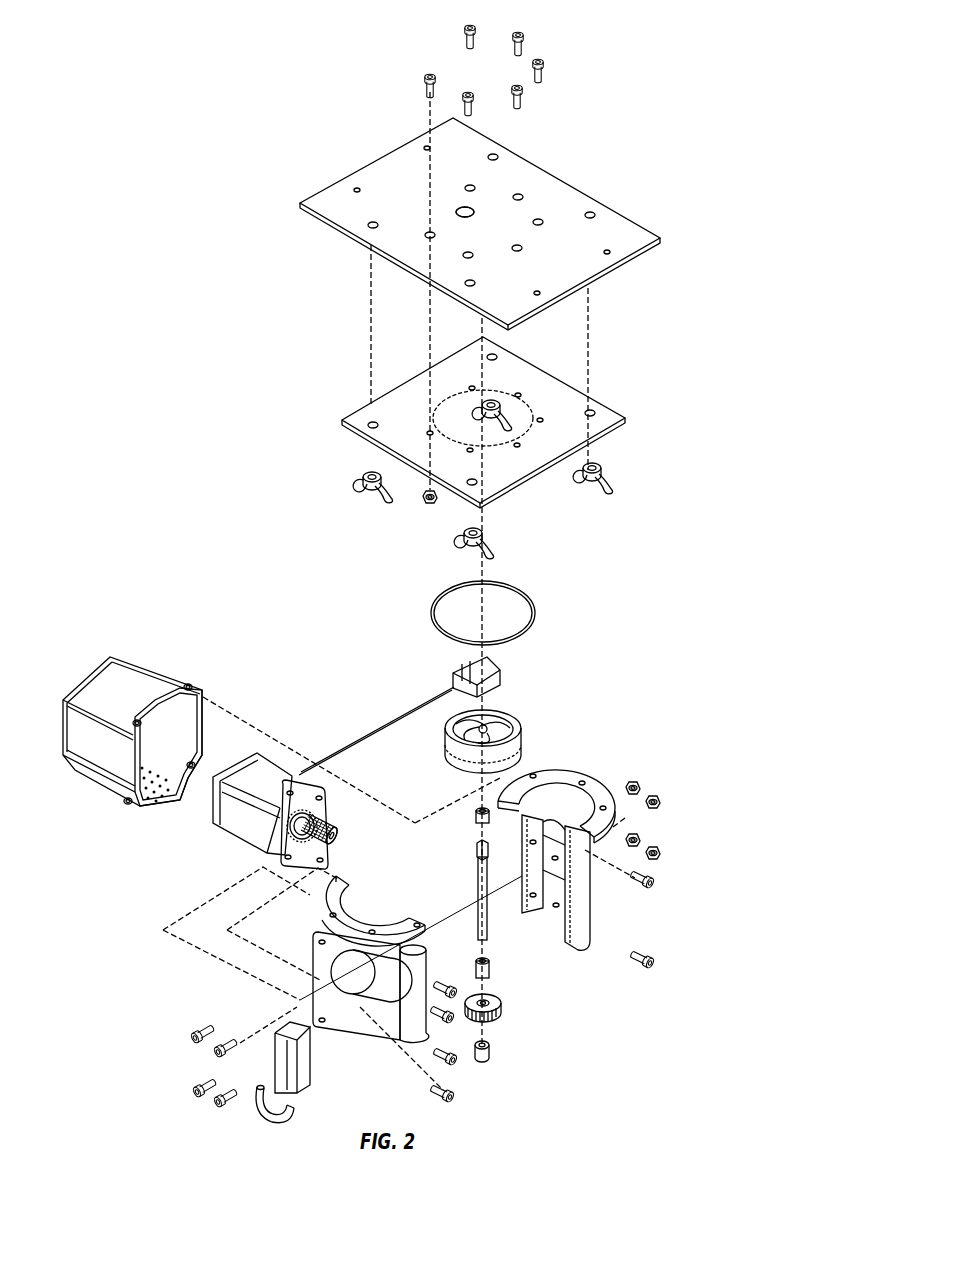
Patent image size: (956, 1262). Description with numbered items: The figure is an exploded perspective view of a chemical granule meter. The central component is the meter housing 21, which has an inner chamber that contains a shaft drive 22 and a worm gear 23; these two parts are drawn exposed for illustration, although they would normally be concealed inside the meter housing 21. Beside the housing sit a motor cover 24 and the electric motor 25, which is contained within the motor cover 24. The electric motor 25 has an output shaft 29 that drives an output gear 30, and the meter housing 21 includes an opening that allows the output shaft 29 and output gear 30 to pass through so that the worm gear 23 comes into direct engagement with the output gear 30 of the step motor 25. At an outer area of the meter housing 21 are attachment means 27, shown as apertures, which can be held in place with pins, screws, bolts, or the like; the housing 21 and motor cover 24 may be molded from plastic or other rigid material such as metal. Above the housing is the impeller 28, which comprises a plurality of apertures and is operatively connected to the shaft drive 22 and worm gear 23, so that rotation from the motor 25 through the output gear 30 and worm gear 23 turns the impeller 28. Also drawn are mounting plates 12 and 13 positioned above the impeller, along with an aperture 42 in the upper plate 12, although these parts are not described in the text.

The top mounting plate 12 is at (372, 176).
The lower mounting plate 13 is at (360, 413).
The meter housing 21 is at (553, 773).
The shaft drive 22 is at (478, 886).
The worm gear 23 is at (490, 1022).
The motor cover 24 is at (100, 665).
The electric motor 25 is at (213, 805).
The attachment means 27 is at (190, 684).
The impeller 28 is at (517, 718).
The output shaft 29 is at (302, 848).
The output gear 30 is at (322, 830).
The aperture 42 is at (478, 206).